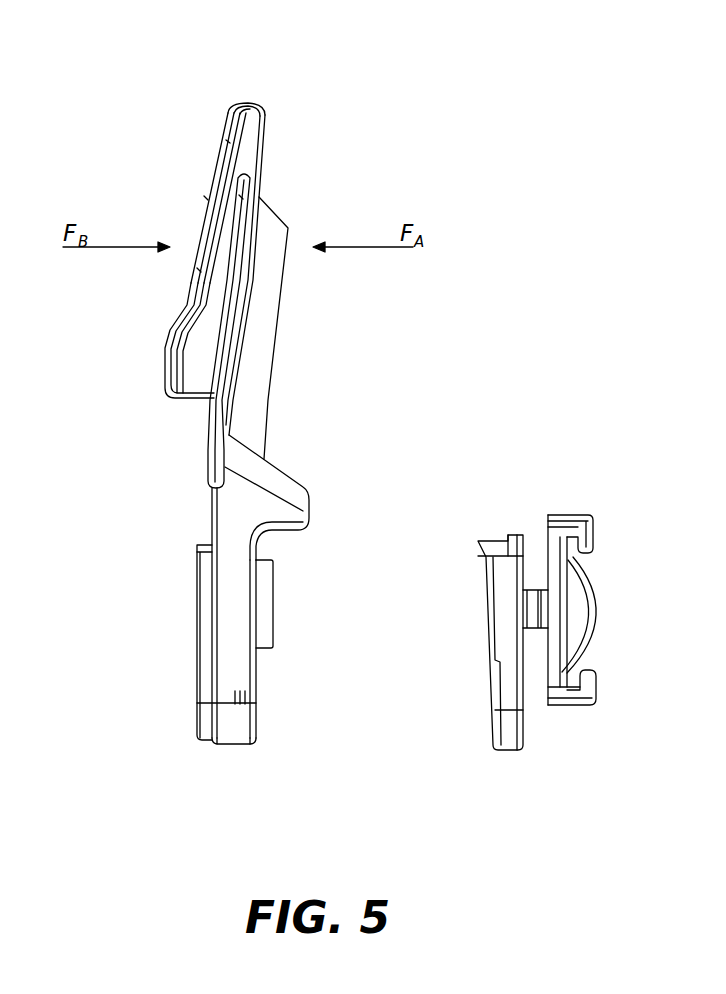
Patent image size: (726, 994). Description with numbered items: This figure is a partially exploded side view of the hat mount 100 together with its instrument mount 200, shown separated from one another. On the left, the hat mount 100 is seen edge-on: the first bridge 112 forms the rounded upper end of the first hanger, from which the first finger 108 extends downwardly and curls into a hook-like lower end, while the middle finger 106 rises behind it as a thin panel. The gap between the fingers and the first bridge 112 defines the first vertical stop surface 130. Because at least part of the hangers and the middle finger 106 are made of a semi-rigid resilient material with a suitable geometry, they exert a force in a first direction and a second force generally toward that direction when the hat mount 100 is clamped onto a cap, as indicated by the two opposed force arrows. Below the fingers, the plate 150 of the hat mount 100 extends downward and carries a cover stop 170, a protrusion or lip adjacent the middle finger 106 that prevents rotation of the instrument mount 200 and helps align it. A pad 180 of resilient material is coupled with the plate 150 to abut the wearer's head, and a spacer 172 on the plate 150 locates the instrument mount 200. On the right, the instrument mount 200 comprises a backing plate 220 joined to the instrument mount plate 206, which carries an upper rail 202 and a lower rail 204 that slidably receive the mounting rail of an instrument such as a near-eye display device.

The hat mount 100 is at (168, 96).
The first bridge 112 is at (239, 106).
The middle finger 106 is at (278, 216).
The first finger 108 is at (188, 358).
The cover stop 170 is at (301, 487).
The spacer 172 is at (265, 622).
The first vertical stop surface 130 is at (278, 709).
The plate 150 is at (253, 735).
The pad 180 is at (198, 623).
The instrument mount 200 is at (586, 466).
The backing plate 220 is at (503, 533).
The upper rail 202 is at (595, 523).
The lower rail 204 is at (593, 692).
The instrument mount plate 206 is at (555, 656).